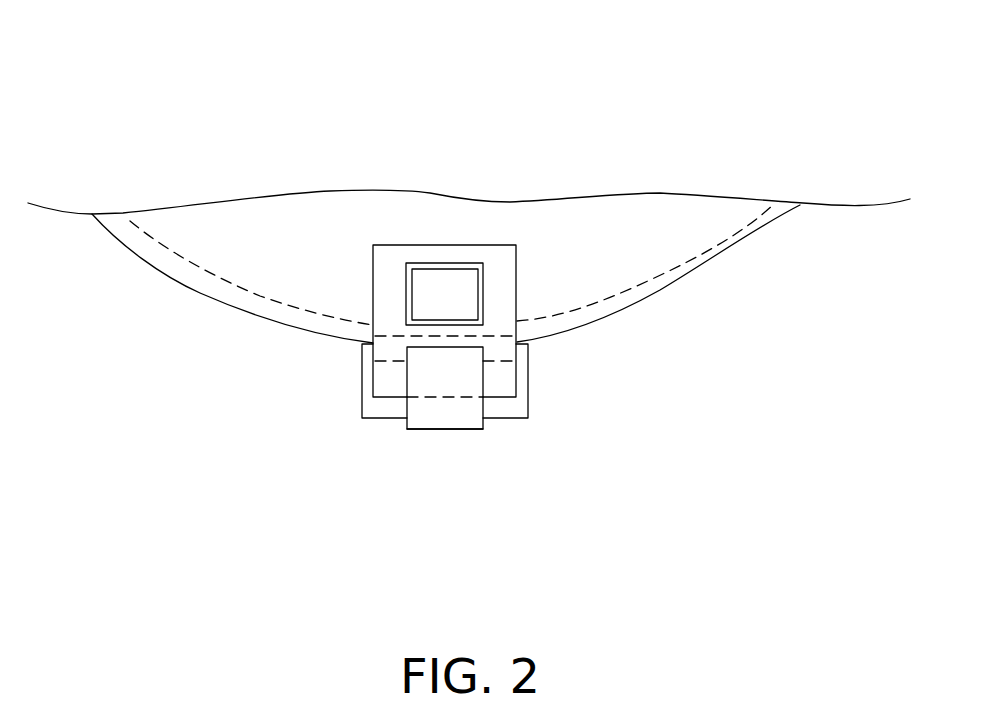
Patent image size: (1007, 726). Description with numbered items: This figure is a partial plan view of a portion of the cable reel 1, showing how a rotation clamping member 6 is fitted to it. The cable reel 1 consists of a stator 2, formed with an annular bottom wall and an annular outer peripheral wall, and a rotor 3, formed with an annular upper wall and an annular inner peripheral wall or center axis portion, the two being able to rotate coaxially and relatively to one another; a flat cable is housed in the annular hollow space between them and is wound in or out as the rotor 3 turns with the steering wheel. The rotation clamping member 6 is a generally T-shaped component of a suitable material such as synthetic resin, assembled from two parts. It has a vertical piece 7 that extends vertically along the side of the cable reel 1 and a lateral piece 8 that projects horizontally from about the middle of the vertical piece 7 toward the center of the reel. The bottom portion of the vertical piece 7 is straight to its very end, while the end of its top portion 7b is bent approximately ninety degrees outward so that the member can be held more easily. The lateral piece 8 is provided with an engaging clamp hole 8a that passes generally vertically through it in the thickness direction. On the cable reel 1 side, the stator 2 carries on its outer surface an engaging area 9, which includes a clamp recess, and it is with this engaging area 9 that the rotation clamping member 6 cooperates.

The cable reel 1 is at (787, 78).
The stator 2 is at (775, 203).
The rotor 3 is at (682, 228).
The rotation clamping member 6 is at (655, 343).
The vertical piece 7 is at (470, 377).
The top portion 7b is at (460, 418).
The lateral piece 8 is at (505, 298).
The engaging clamp hole 8a is at (433, 324).
The engaging area 9 is at (385, 426).